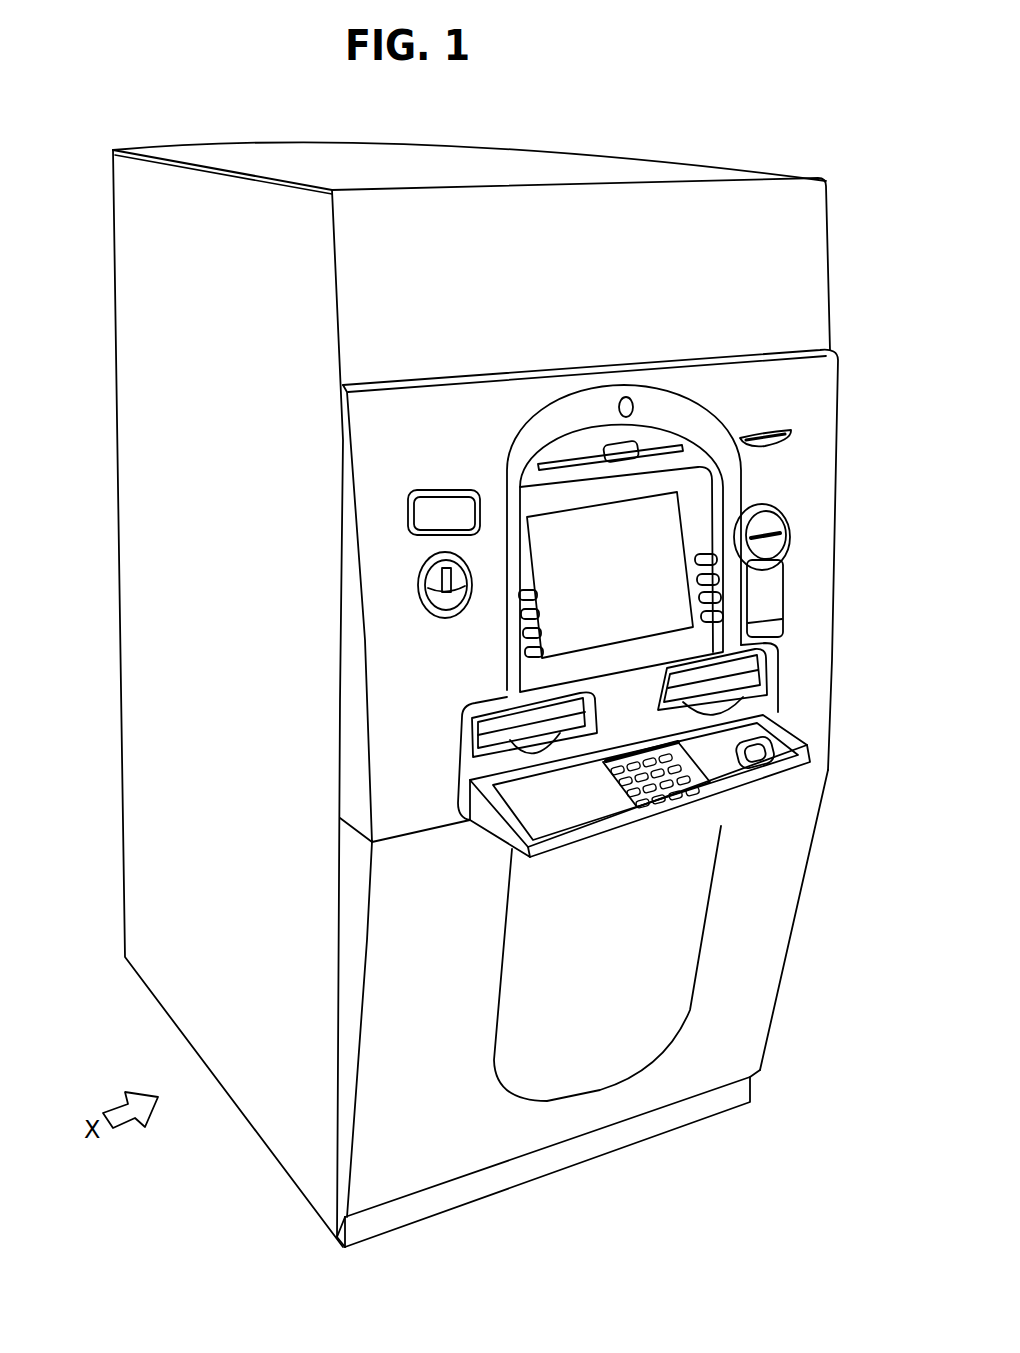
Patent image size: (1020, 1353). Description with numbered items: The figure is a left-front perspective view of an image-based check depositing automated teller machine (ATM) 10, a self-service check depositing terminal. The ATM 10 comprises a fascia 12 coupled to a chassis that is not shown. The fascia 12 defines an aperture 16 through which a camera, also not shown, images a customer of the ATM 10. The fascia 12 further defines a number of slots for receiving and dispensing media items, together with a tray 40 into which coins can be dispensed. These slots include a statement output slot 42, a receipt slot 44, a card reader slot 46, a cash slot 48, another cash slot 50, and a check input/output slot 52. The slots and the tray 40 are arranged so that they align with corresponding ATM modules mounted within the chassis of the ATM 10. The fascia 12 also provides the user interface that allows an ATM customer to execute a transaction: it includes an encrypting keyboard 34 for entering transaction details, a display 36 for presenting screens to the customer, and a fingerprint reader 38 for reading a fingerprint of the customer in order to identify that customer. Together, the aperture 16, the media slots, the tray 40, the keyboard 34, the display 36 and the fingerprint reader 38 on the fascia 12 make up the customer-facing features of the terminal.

The image-based check depositing automated teller machine 10 is at (672, 122).
The fascia 12 is at (342, 448).
The aperture 16 is at (631, 397).
The encrypting keyboard 34 is at (720, 780).
The display 36 is at (700, 493).
The fingerprint reader 38 is at (777, 753).
The tray 40 is at (432, 578).
The statement output slot 42 is at (658, 442).
The receipt slot 44 is at (791, 430).
The card reader slot 46 is at (777, 540).
The cash slot 48 is at (470, 731).
The cash slot 50 is at (745, 673).
The check input/output slot 52 is at (410, 516).